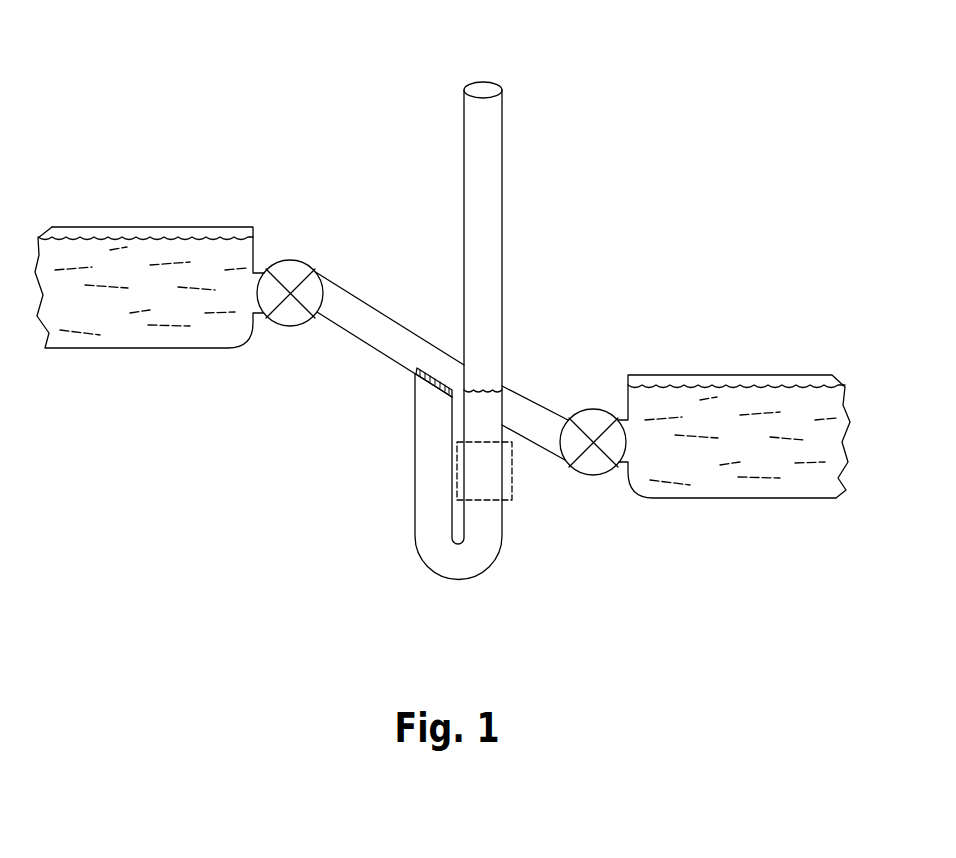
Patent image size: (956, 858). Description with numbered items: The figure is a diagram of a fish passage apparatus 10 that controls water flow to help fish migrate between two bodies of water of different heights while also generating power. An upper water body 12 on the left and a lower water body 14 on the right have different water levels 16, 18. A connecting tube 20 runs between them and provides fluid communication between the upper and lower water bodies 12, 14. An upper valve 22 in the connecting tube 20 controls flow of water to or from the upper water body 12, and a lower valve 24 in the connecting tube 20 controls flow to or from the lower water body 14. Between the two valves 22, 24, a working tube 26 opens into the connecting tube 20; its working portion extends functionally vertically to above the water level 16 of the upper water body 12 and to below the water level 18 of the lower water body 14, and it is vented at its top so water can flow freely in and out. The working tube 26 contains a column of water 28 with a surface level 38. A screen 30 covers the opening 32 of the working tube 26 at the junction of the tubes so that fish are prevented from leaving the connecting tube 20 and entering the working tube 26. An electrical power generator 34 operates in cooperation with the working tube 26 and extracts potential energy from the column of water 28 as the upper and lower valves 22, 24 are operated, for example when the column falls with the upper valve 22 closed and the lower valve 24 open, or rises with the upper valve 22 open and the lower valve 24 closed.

The fish passage apparatus 10 is at (333, 68).
The upper water body 12 is at (85, 250).
The lower water body 14 is at (805, 395).
The water level of the upper water body 16 is at (181, 235).
The water level of the lower water body 18 is at (749, 385).
The connecting tube 20 is at (378, 316).
The upper valve 22 is at (294, 270).
The lower valve 24 is at (598, 412).
The working tube 26 is at (503, 142).
The column of water 28 is at (490, 415).
The screen 30 is at (431, 399).
The opening 32 is at (437, 372).
The electrical power generator 34 is at (512, 472).
The surface level 38 is at (485, 387).